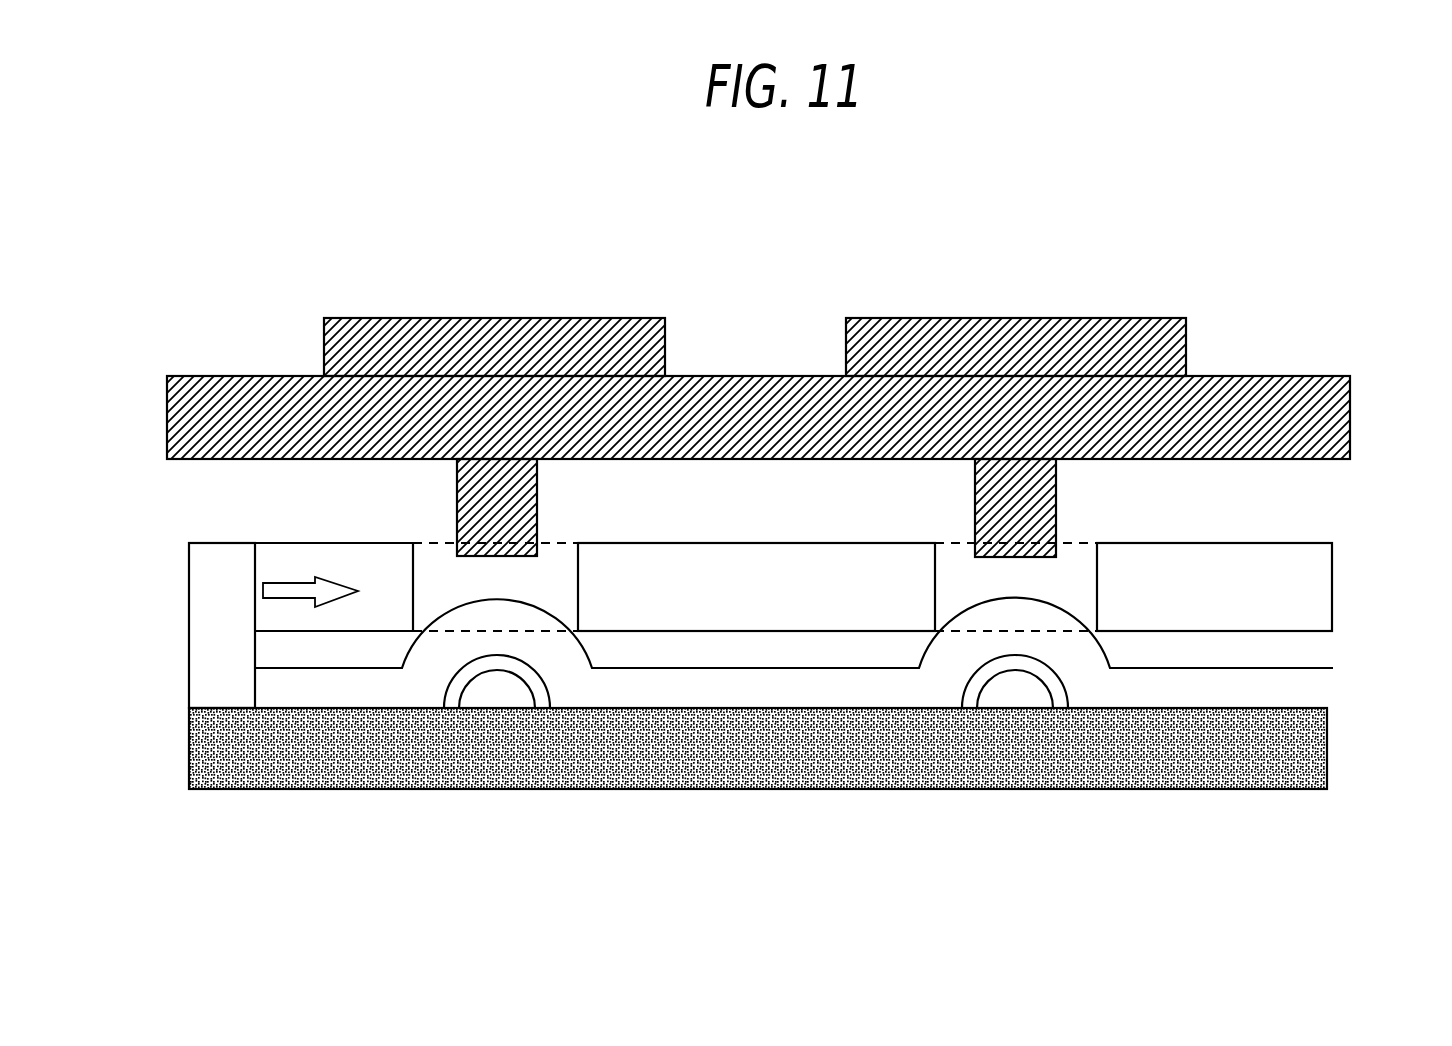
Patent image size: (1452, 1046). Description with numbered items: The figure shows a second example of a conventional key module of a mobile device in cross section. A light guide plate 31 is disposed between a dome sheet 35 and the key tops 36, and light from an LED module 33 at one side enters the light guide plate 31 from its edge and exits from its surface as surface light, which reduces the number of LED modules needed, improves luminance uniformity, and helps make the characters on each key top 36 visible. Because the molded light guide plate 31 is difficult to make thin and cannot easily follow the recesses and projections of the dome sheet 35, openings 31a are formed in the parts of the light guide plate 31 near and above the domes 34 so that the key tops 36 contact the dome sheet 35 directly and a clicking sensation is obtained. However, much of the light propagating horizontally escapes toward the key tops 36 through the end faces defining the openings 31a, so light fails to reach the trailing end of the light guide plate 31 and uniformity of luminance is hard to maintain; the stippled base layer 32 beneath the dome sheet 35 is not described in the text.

The light guide plate 31 is at (660, 543).
The openings 31a is at (435, 543).
The substrate 32 is at (468, 790).
The LED module 33 is at (188, 673).
The domes 34 is at (985, 673).
The dome sheet 35 is at (1257, 668).
The key top 36 is at (428, 318).